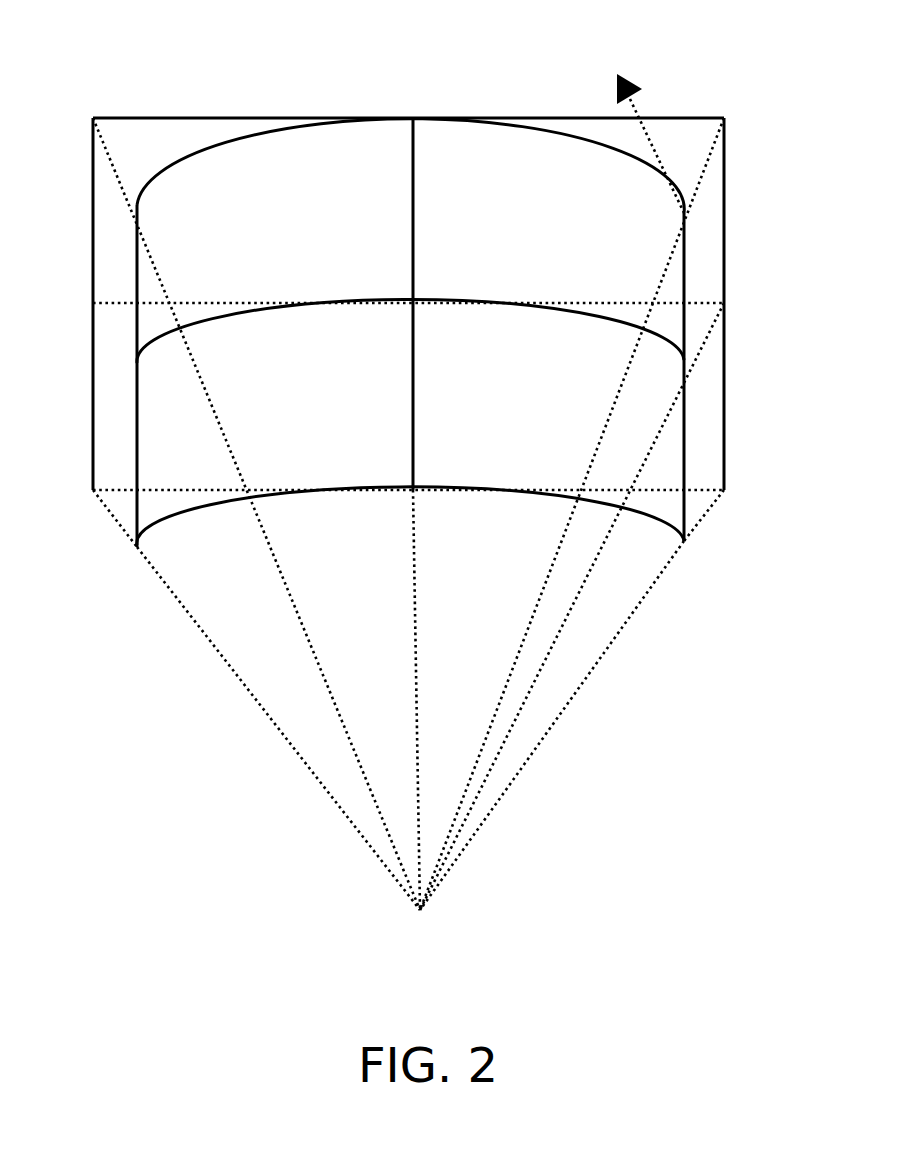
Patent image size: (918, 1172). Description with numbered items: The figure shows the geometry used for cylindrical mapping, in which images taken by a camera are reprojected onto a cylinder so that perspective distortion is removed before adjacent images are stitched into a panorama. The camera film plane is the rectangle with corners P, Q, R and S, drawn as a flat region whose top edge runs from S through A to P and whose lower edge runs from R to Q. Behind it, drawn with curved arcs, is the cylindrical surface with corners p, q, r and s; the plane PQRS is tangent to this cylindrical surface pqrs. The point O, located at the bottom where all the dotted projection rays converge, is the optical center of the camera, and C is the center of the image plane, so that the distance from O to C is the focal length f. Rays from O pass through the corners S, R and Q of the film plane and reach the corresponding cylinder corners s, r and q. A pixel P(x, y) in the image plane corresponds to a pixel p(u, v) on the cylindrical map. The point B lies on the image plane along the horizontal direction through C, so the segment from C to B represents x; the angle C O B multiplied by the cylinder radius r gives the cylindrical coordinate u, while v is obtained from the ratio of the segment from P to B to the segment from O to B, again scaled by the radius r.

The corner of film plane S is at (244, 491).
The point on film plane A is at (405, 280).
The point on image plane B is at (593, 591).
The center of image plane C is at (410, 331).
The corner of film plane R is at (389, 506).
The corner of film plane Q is at (730, 499).
The corner of cylindrical surface r is at (399, 698).
The corner of cylindrical surface q is at (574, 561).
The corner of cylindrical surface s is at (125, 376).
The optical center O is at (431, 738).